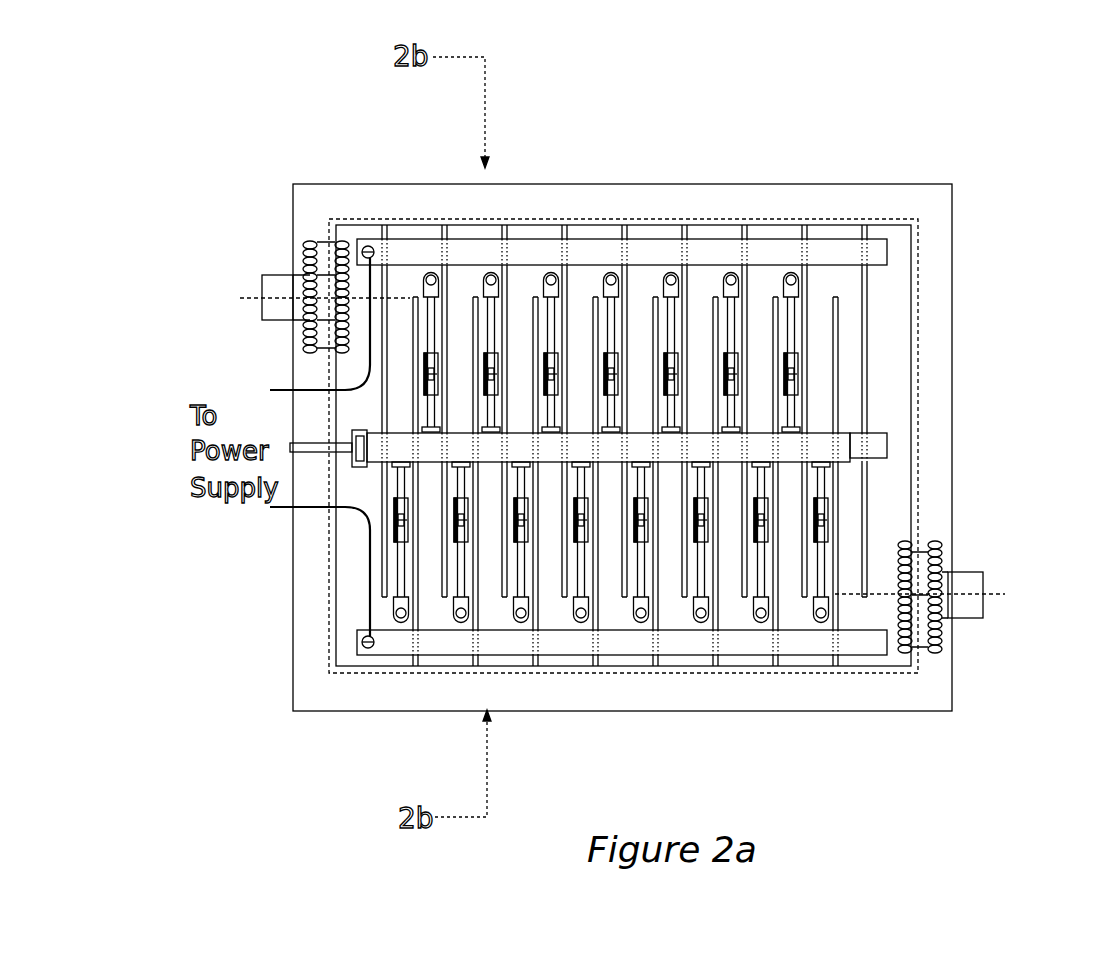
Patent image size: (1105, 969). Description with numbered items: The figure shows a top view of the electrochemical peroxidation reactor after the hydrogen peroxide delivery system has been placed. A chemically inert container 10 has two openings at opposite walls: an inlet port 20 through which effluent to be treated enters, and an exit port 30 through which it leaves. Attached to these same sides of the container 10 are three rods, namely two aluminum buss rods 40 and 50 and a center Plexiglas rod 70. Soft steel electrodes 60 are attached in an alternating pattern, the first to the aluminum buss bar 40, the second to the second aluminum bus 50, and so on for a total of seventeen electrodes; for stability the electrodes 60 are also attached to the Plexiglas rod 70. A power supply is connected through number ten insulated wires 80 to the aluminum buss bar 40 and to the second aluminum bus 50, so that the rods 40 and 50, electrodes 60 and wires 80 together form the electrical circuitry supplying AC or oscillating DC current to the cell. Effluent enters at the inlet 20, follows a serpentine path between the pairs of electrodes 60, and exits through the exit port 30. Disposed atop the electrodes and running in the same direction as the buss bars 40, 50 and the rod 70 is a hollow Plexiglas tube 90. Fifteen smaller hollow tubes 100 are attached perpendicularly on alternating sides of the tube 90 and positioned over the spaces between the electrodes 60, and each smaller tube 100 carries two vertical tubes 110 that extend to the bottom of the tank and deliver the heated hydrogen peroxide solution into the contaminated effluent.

The chemically inert container 10 is at (683, 72).
The inlet port 20 is at (262, 320).
The exit port 30 is at (967, 620).
The aluminum buss rod 40 is at (887, 245).
The second aluminum bus 50 is at (865, 643).
The soft steel electrodes 60 is at (410, 662).
The Plexiglas rod 70 is at (887, 443).
The insulated wires 80 is at (287, 390).
The hollow Plexiglas tube 90 is at (853, 465).
The smaller hollow tubes 100 is at (730, 330).
The vertical tubes 110 is at (613, 372).